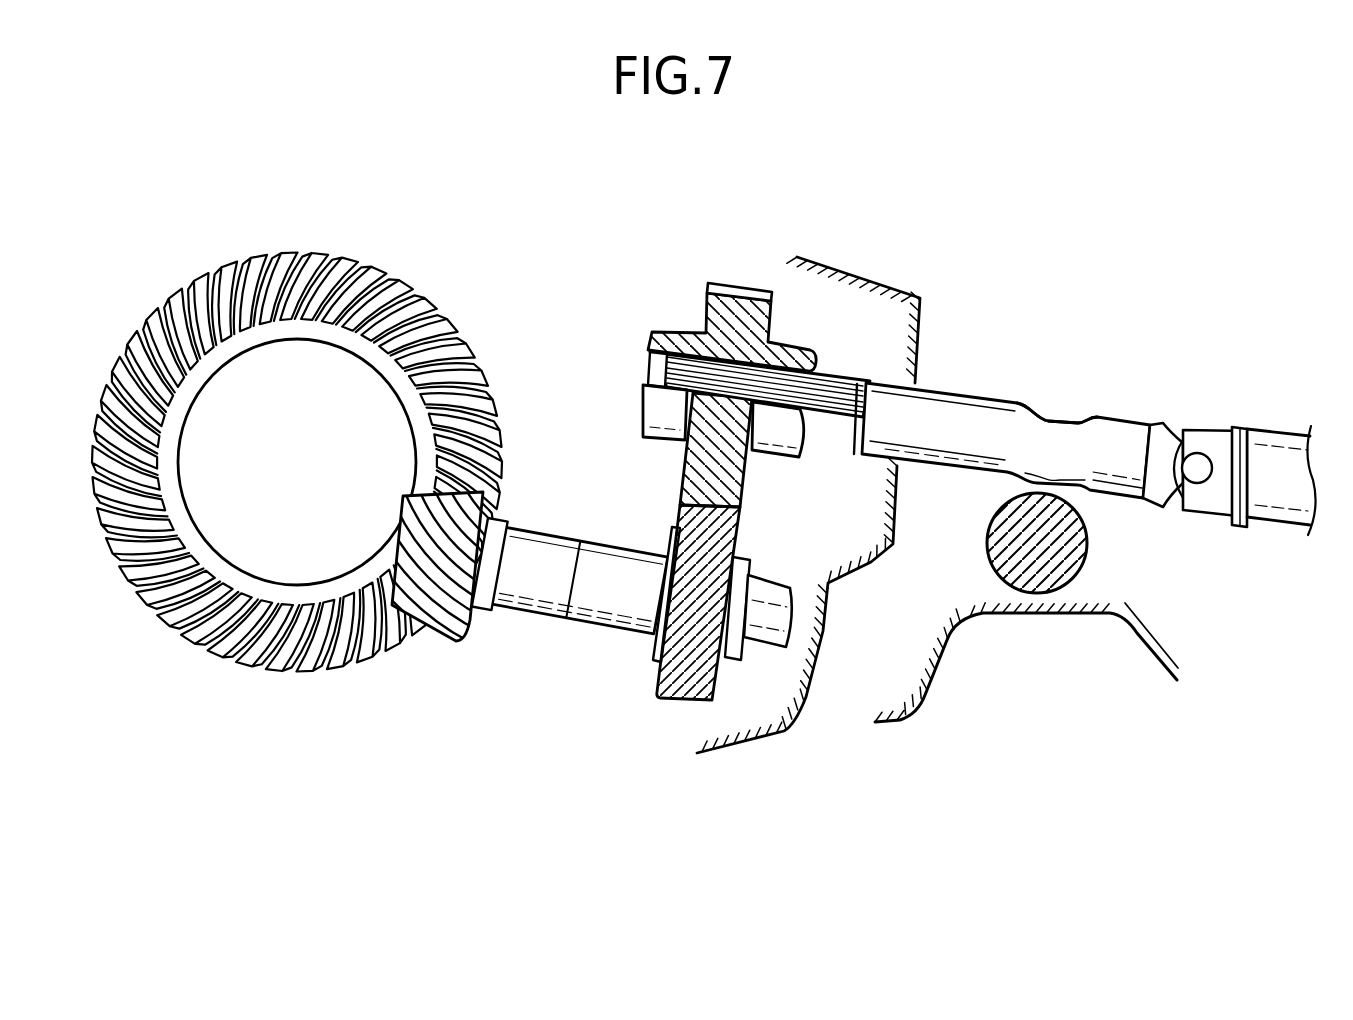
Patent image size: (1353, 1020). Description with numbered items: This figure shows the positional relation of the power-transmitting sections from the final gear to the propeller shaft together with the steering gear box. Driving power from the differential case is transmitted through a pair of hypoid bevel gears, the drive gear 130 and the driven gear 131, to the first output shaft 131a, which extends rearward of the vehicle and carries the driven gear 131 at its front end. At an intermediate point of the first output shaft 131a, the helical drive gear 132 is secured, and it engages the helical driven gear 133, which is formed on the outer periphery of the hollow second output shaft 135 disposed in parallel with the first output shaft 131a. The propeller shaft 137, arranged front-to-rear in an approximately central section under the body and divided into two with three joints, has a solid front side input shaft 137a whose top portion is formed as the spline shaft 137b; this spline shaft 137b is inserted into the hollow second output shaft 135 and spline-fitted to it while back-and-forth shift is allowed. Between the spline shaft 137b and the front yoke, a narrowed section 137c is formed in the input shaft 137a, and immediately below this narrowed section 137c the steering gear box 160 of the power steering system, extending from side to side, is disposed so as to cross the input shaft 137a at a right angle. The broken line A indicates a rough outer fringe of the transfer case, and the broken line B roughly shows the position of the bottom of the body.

The drive gear 130 is at (388, 262).
The driven gear 131 is at (438, 636).
The first output shaft 131a is at (530, 613).
The drive gear 132 is at (673, 702).
The driven gear 133 is at (741, 282).
The second output shaft 135 is at (660, 338).
The propeller shaft 137 is at (1273, 438).
The front side input shaft 137a is at (1020, 402).
The spline shaft 137b is at (835, 372).
The narrowed section 137c is at (1068, 421).
The steering gear box 160 is at (1090, 546).
The broken line A is at (799, 715).
The broken line B is at (924, 710).